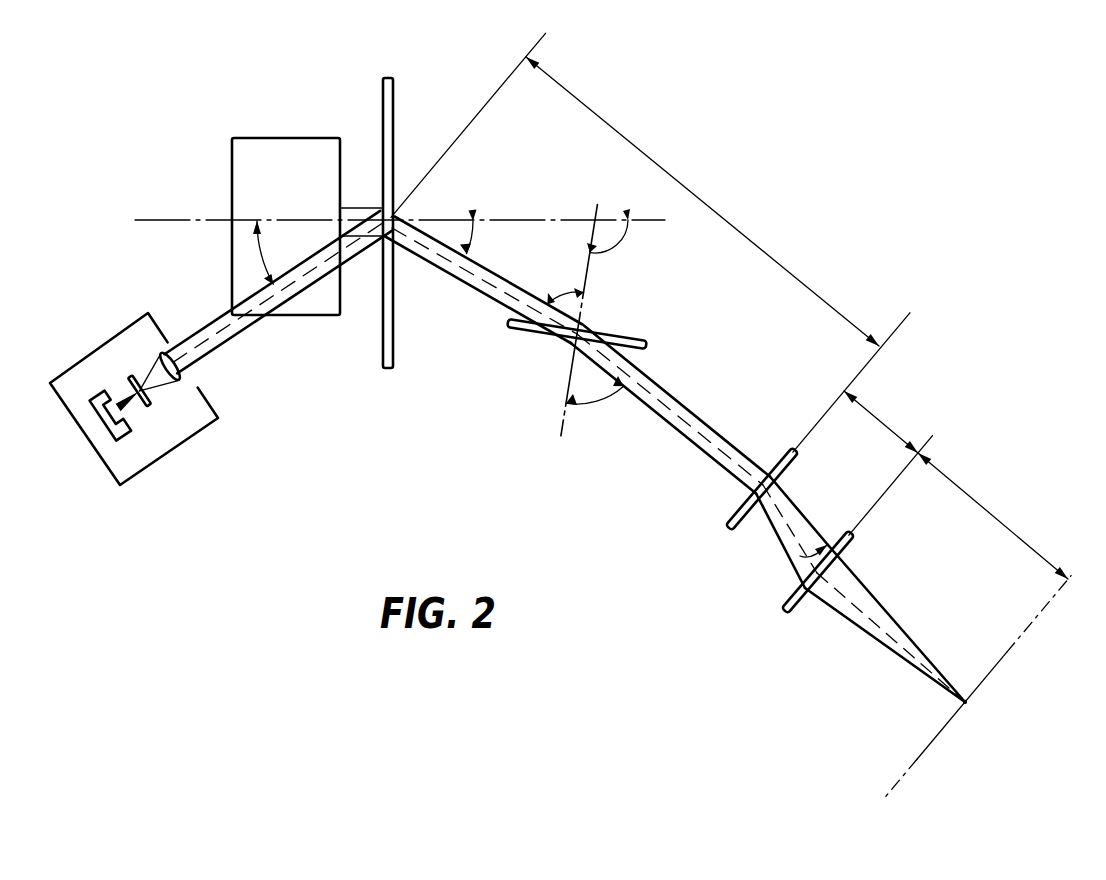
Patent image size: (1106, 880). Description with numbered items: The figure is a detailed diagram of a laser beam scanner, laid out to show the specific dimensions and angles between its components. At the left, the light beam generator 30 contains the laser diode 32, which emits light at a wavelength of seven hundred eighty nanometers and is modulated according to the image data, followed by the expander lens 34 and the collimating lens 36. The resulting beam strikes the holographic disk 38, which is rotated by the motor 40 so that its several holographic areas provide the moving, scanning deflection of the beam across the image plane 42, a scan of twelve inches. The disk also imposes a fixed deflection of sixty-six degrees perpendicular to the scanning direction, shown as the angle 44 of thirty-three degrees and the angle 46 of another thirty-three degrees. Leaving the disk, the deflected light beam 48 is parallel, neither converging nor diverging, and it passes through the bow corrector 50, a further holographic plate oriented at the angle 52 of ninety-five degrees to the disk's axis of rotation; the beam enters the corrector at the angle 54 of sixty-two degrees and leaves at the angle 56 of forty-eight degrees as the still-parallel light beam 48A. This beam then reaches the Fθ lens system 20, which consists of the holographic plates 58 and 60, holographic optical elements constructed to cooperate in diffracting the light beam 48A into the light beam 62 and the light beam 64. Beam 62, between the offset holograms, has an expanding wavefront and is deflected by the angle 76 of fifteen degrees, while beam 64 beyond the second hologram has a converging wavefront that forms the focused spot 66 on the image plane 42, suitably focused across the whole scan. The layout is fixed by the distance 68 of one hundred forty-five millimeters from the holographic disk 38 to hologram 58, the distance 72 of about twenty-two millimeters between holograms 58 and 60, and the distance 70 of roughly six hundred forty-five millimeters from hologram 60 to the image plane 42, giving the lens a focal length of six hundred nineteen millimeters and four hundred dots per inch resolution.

The Fθ lens system 20 is at (741, 560).
The light beam generator 30 is at (93, 352).
The laser diode 32 is at (114, 442).
The expander lens 34 is at (150, 404).
The collimating lens 36 is at (190, 383).
The holographic disk 38 is at (392, 78).
The motor 40 is at (272, 138).
The image plane 42 is at (1007, 658).
The angle 44 is at (261, 257).
The angle 46 is at (472, 238).
The deflected light beam 48 is at (475, 287).
The light beam 48A is at (707, 424).
The bow corrector 50 is at (640, 338).
The angle 52 is at (621, 241).
The angle 54 is at (571, 291).
The angle 56 is at (597, 401).
The holographic plate 58 is at (793, 449).
The holographic plate 60 is at (851, 535).
The light beam 62 is at (778, 500).
The light beam 64 is at (903, 630).
The spot 66 is at (955, 703).
The distance 68 is at (718, 222).
The distance 70 is at (997, 521).
The distance 72 is at (888, 428).
The angle 76 is at (800, 560).